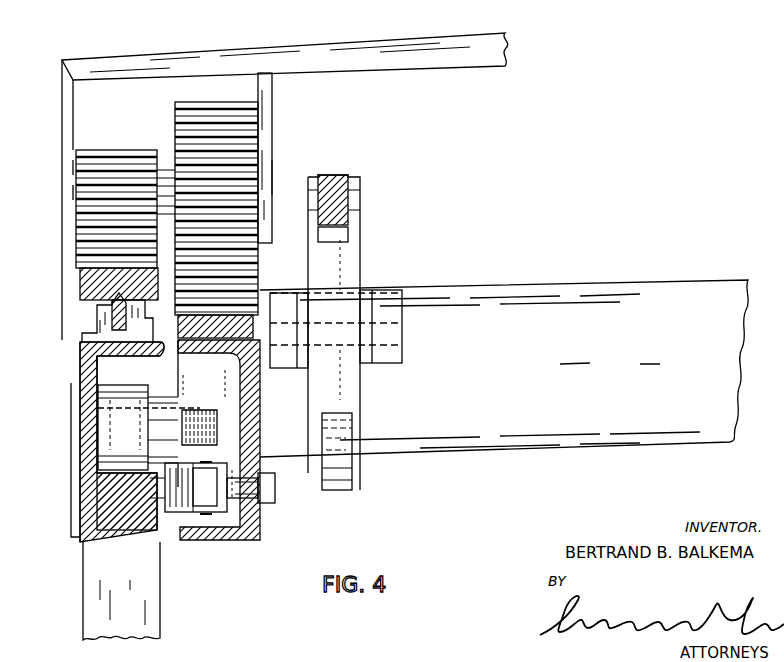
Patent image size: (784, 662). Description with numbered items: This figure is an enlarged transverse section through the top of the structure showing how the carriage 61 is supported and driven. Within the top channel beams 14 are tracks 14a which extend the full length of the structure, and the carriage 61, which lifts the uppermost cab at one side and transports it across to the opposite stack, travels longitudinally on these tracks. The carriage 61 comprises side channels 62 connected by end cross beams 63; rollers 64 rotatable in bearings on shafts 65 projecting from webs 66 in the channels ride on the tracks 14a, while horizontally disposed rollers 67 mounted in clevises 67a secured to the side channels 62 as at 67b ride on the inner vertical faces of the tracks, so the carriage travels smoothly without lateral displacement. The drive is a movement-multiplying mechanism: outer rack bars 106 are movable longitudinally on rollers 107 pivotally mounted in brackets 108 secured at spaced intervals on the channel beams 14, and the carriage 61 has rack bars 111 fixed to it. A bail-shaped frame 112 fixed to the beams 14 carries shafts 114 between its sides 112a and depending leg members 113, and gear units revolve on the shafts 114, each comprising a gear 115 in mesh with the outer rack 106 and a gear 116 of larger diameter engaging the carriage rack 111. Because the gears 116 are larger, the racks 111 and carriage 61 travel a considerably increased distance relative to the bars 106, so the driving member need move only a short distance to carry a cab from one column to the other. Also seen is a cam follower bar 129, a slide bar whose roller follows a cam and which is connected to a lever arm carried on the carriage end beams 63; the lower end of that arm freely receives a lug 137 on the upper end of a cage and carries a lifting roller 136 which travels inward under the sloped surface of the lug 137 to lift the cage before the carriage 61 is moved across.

The bail-shaped frame 112 is at (508, 46).
The sides of bail-shaped frame 112a is at (60, 100).
The depending leg members 113 is at (273, 136).
The shafts 114 is at (267, 185).
The gears 115 is at (104, 165).
The gears of larger diameter 116 is at (185, 120).
The outer rack bars 106 is at (88, 282).
The rack bars 111 is at (232, 303).
The rollers 107 is at (112, 313).
The brackets 108 is at (90, 345).
The top channel beams 14 is at (78, 542).
The tracks 14a is at (127, 520).
The side channels 62 is at (256, 540).
The rollers 64 is at (133, 396).
The shafts 65 is at (120, 402).
The webs 66 is at (206, 391).
The horizontally disposed rollers 67 is at (168, 514).
The clevises 67a is at (222, 514).
The securing point 67b is at (270, 490).
The cam follower bar 129 is at (338, 178).
The lugs 137 is at (340, 414).
The lifting rollers 136 is at (352, 476).
The carriage 61 is at (538, 272).
The end cross beams 63 is at (546, 383).